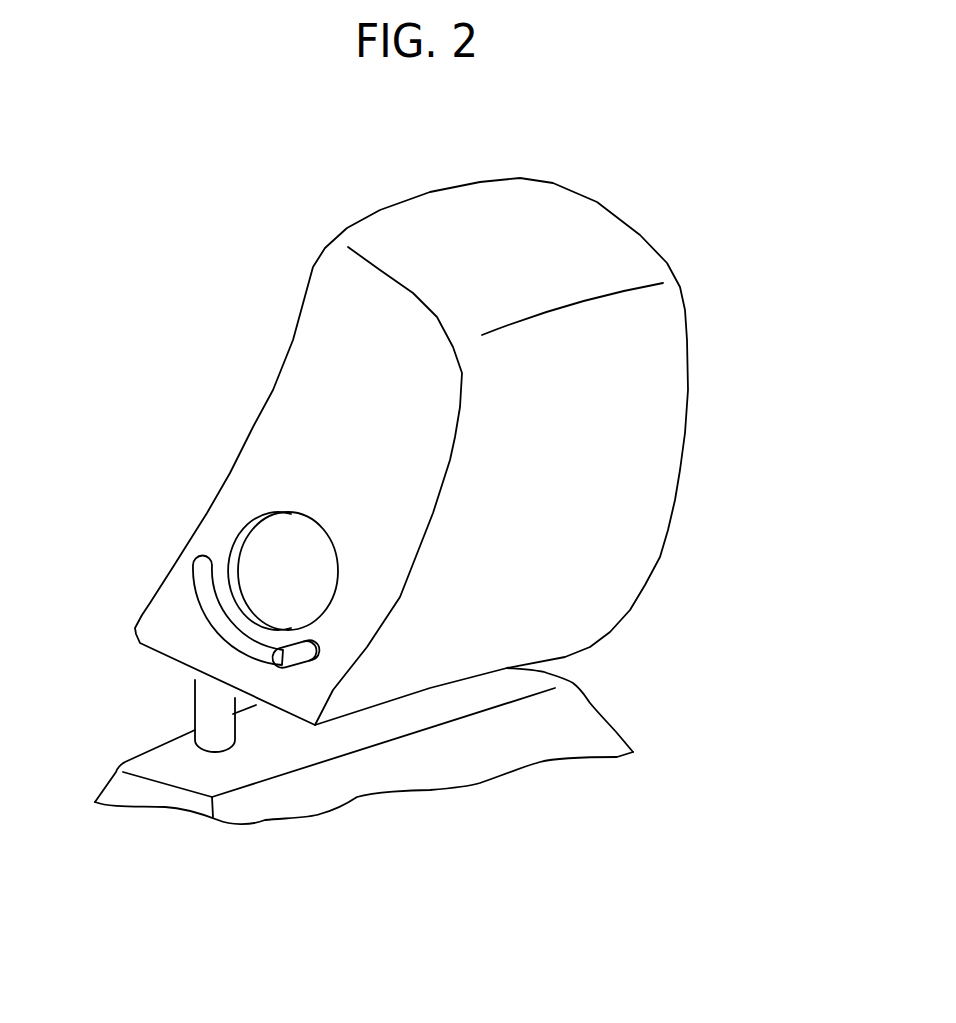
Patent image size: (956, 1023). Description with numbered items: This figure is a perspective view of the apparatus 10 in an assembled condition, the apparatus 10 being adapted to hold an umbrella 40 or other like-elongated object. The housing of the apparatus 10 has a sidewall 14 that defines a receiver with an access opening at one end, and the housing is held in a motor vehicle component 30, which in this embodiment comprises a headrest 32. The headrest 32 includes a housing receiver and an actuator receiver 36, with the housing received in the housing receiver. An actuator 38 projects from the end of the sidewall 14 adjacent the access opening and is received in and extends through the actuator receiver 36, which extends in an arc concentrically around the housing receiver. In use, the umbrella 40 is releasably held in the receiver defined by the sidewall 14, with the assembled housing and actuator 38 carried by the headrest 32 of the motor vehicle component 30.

The apparatus 10 is at (137, 340).
The sidewall 14 is at (240, 527).
The motor vehicle component 30 is at (737, 339).
The headrest 32 is at (635, 545).
The actuator receiver 36 is at (215, 622).
The actuator 38 is at (293, 660).
The umbrella 40 is at (267, 570).